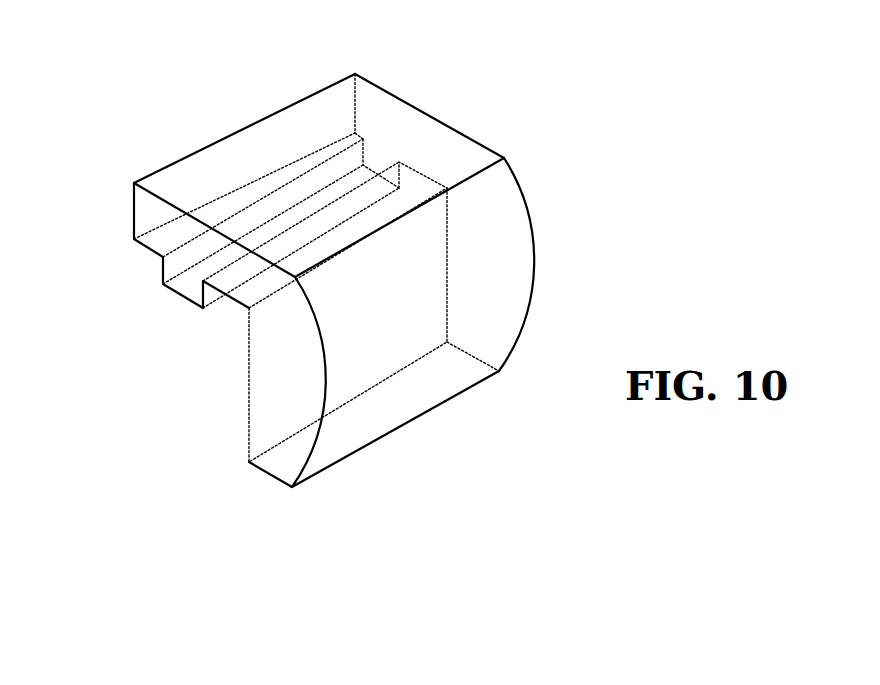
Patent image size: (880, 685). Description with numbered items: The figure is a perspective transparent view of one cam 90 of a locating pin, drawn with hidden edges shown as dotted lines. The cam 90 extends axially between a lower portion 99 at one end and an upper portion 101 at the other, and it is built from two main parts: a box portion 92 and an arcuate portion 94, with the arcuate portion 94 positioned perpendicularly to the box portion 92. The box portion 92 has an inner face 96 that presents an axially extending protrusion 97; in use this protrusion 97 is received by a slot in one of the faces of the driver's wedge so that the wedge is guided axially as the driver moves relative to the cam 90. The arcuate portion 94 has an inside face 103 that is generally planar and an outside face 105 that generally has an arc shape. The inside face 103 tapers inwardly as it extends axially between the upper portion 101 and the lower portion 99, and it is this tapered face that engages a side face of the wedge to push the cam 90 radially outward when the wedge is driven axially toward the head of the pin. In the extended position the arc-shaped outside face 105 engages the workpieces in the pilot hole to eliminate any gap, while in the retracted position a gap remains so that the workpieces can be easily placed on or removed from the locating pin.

The cam 90 is at (578, 137).
The box portion 92 is at (258, 138).
The arcuate portion 94 is at (512, 263).
The inner face 96 is at (233, 298).
The axially extending protrusion 97 is at (185, 287).
The lower portion 99 is at (143, 210).
The upper portion 101 is at (402, 97).
The inside face 103 is at (247, 402).
The outside face 105 is at (382, 365).